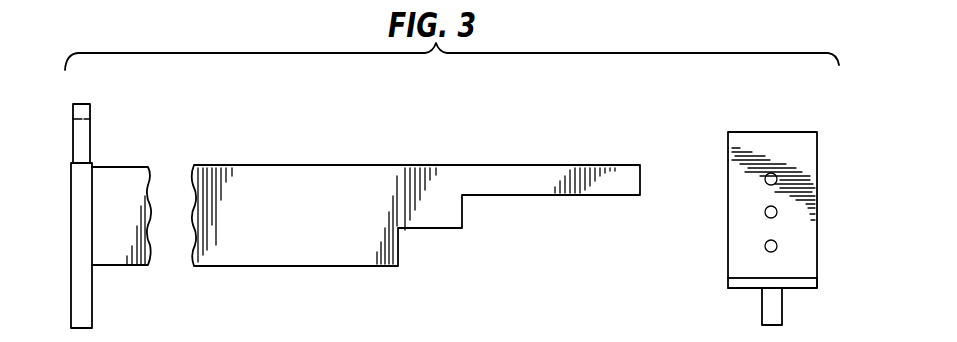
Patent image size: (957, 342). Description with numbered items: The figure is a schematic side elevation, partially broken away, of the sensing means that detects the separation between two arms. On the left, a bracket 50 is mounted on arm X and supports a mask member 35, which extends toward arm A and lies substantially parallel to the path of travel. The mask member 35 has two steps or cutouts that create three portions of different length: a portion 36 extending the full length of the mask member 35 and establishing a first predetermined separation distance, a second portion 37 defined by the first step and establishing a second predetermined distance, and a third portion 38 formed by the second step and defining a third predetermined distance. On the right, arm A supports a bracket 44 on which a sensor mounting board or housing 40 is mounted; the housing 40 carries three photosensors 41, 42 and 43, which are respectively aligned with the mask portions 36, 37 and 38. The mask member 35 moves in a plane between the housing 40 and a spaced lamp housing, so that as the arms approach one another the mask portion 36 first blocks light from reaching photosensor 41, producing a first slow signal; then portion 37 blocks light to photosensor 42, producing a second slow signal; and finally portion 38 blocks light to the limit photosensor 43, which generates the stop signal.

The bracket 50 is at (84, 127).
The arm X is at (86, 304).
The mask member 35 is at (416, 213).
The portion 36 is at (598, 190).
The second portion 37 is at (454, 221).
The third portion 38 is at (391, 256).
The sensor mounting board or housing 40 is at (764, 212).
The photosensor 41 is at (763, 178).
The photosensor 42 is at (763, 212).
The limit photosensor 43 is at (763, 246).
The bracket 44 is at (806, 284).
The arm A is at (766, 311).